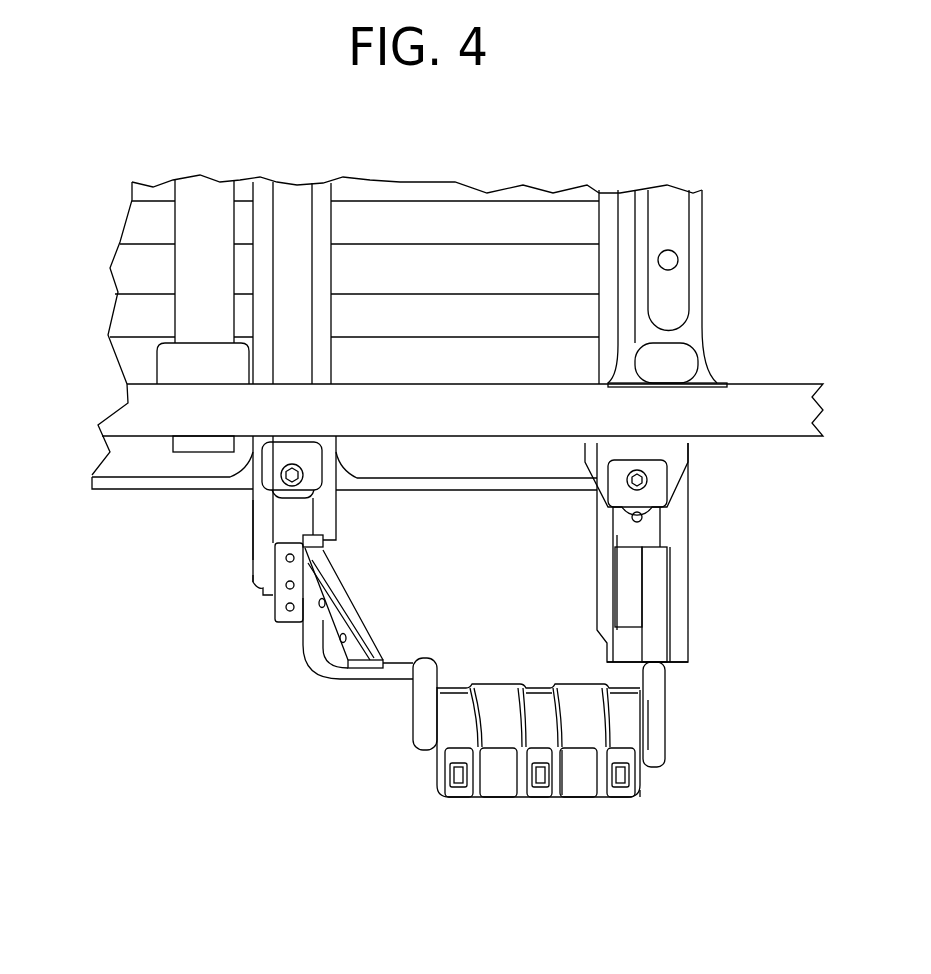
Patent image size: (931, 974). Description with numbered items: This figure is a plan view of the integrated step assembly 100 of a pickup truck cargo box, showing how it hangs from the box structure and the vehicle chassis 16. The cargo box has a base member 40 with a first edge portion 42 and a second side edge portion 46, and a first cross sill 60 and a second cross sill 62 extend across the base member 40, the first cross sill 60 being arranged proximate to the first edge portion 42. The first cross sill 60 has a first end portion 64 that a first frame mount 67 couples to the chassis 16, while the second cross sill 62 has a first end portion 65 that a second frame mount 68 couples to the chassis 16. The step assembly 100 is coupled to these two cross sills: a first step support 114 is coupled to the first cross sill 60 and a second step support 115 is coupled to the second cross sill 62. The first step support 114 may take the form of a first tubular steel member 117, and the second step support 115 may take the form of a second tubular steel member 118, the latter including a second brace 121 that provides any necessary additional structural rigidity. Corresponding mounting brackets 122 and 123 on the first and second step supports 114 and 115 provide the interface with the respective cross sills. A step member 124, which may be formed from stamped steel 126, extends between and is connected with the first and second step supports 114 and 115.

The chassis 16 is at (753, 446).
The base member 40 is at (578, 266).
The first edge portion 42 is at (612, 342).
The second side edge portion 46 is at (122, 489).
The first cross sill 60 is at (677, 597).
The second cross sill 62 is at (245, 557).
The first end portion 64 is at (678, 652).
The first end portion 65 is at (255, 584).
The first frame mount 67 is at (262, 498).
The second frame mount 68 is at (682, 497).
The integrated step assembly 100 is at (694, 813).
The first step support 114 is at (669, 693).
The second step support 115 is at (307, 668).
The first tubular steel member 117 is at (653, 727).
The second tubular steel member 118 is at (340, 678).
The second brace 121 is at (345, 605).
The mounting bracket 122 is at (623, 557).
The mounting bracket 123 is at (288, 546).
The step member 124 is at (575, 786).
The stamped steel 126 is at (492, 718).